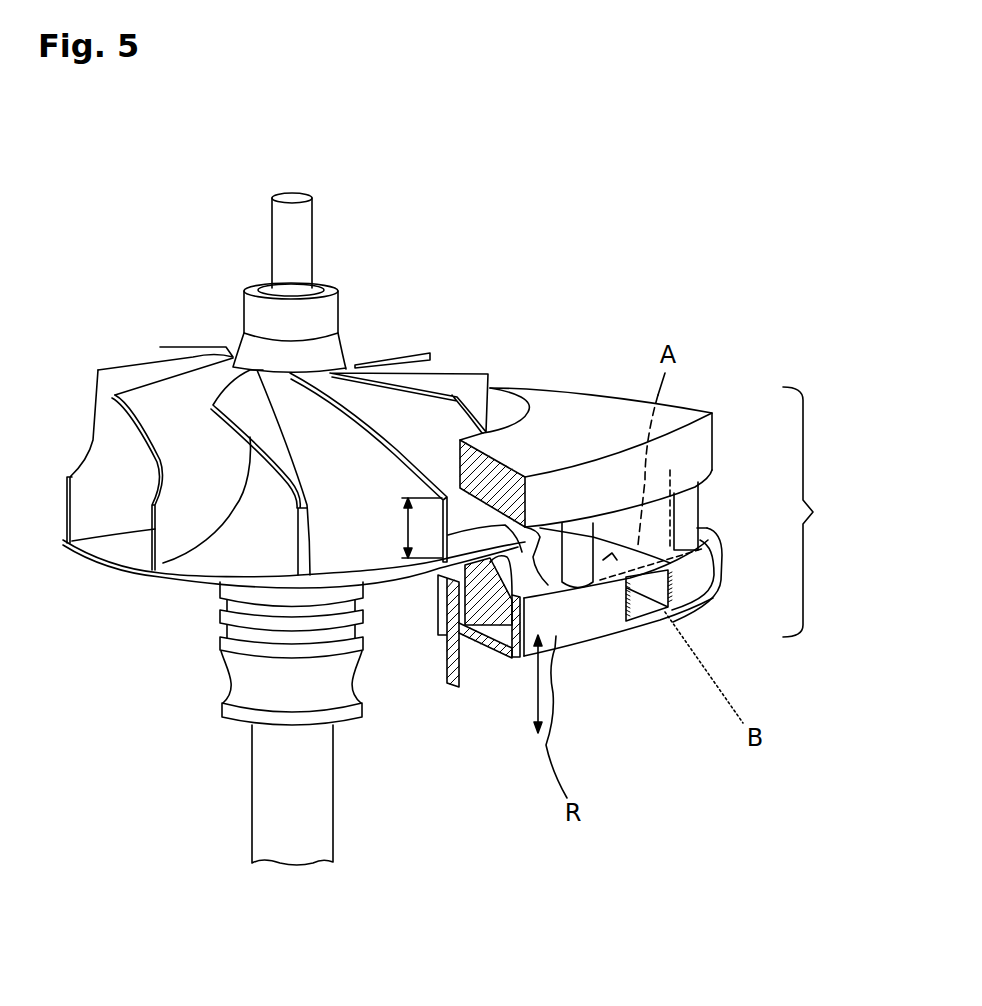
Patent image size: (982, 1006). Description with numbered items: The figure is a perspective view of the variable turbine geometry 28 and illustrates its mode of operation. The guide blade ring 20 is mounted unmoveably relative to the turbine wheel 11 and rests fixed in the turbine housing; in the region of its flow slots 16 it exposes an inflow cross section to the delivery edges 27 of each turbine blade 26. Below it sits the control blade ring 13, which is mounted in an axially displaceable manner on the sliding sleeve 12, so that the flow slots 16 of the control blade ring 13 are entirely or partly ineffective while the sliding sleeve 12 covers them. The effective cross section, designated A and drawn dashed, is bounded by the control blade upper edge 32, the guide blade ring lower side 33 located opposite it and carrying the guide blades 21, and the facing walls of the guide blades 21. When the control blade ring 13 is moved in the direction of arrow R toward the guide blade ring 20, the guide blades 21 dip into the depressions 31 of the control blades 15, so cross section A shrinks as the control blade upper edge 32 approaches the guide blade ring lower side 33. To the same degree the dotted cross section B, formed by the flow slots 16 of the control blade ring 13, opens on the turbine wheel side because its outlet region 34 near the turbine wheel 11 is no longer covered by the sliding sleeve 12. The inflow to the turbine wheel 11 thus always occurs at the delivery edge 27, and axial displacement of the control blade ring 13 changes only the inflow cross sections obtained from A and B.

The turbine wheel 11 is at (208, 563).
The sliding sleeve 12 is at (480, 673).
The control blade ring 13 is at (690, 617).
The control blades 15 is at (592, 625).
The flow slots 16 is at (643, 607).
The guide blade ring 20 is at (563, 403).
The guide blades 21 is at (570, 533).
The turbine blade 26 is at (414, 378).
The delivery edge 27 is at (408, 560).
The variable turbine geometry 28 is at (818, 512).
The depressions 31 is at (551, 545).
The control blade upper edge 32 is at (582, 613).
The guide blade ring lower side 33 is at (705, 500).
The outlet region 34 is at (370, 590).